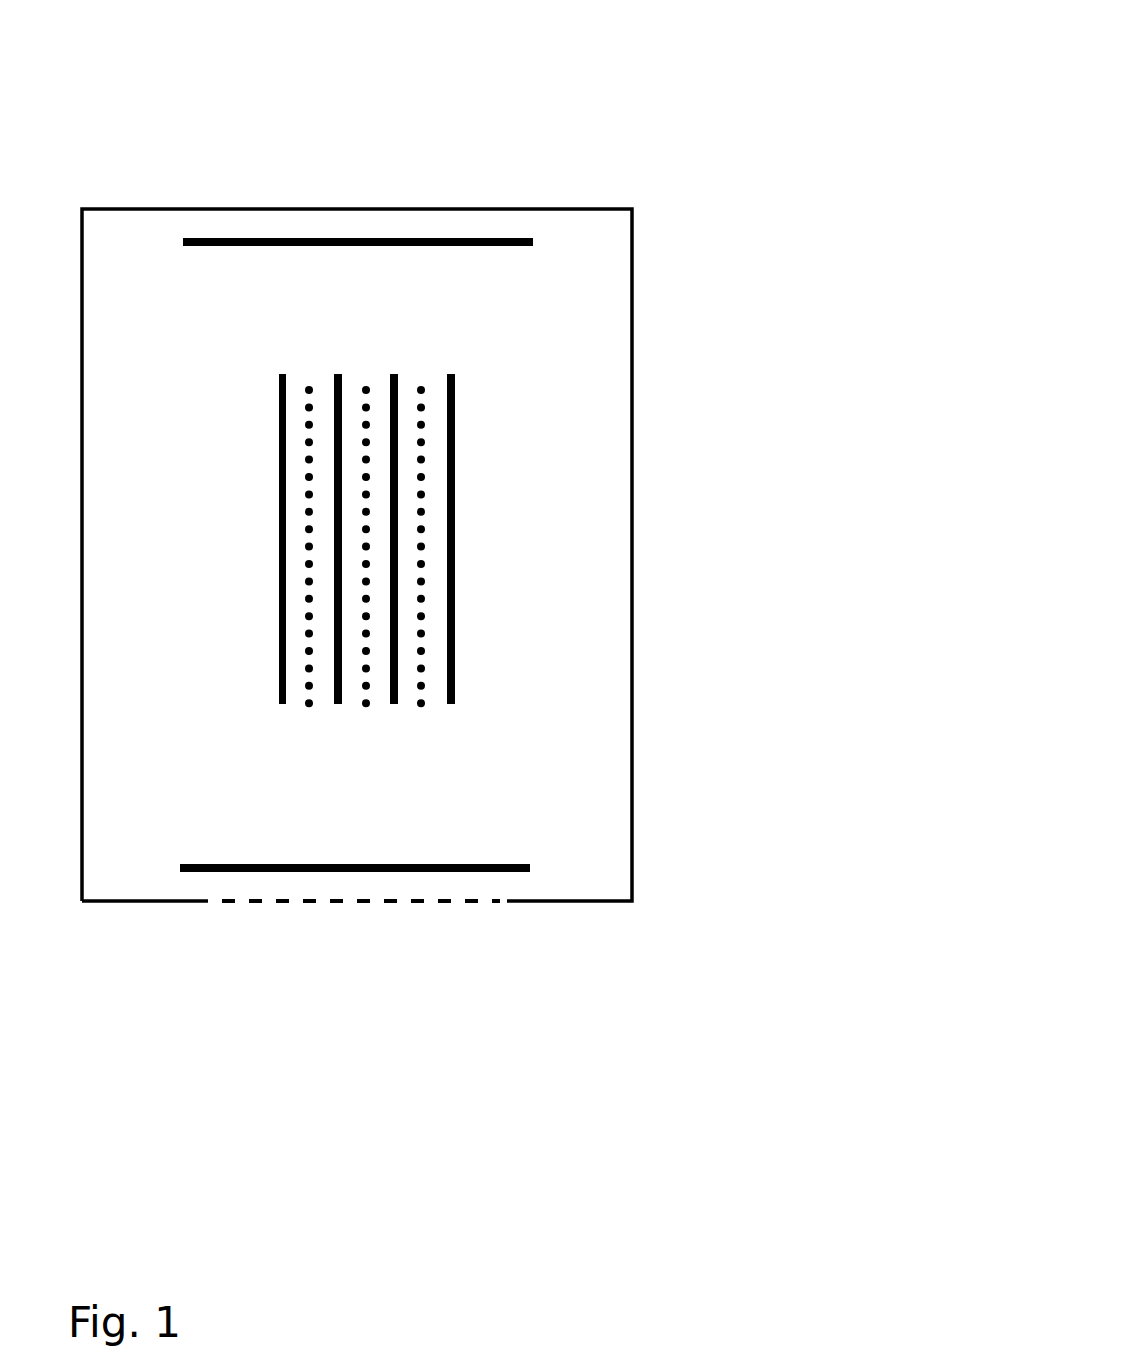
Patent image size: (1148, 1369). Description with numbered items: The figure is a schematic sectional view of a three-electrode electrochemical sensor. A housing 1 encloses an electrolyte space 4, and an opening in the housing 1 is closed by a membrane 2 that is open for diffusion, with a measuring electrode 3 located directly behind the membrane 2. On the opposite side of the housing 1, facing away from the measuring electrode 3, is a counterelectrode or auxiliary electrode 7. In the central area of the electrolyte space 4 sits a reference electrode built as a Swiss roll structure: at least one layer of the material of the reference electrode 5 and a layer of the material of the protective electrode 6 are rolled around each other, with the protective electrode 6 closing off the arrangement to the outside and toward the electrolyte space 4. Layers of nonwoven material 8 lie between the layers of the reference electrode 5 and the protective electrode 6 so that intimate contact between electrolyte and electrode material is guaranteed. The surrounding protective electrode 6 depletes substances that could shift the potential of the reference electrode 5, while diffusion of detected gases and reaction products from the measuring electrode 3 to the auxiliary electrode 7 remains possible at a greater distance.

The housing 1 is at (633, 208).
The membrane 2 is at (330, 903).
The measuring electrode 3 is at (410, 872).
The electrolyte space 4 is at (480, 770).
The reference electrode 5 is at (340, 427).
The protective electrode 6 is at (283, 374).
The auxiliary electrode 7 is at (420, 238).
The nonwoven material 8 is at (314, 655).